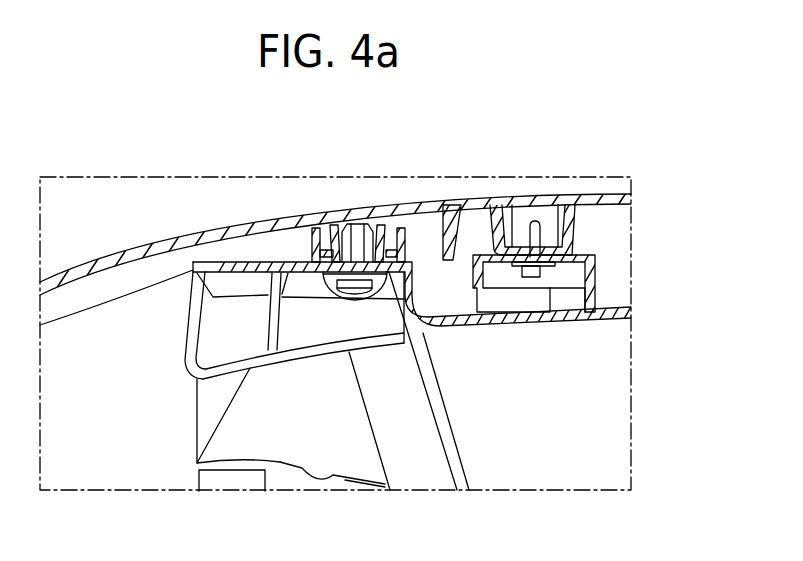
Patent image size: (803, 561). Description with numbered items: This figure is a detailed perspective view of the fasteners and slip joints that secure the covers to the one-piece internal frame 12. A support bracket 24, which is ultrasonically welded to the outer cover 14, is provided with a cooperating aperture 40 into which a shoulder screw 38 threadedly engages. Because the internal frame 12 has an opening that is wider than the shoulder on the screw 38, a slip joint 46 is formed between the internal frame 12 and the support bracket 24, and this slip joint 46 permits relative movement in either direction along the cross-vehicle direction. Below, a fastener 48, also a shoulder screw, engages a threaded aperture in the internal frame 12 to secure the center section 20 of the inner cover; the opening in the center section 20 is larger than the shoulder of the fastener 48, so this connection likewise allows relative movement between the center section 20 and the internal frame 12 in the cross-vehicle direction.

The outer cover 14 is at (250, 217).
The internal frame 12 is at (308, 252).
The support bracket 24 is at (461, 212).
The cooperating aperture 40 is at (529, 221).
The shoulder screw 38 is at (526, 268).
The slip joint 46 is at (599, 168).
The fastener 48 is at (362, 297).
The center section 20 is at (543, 450).